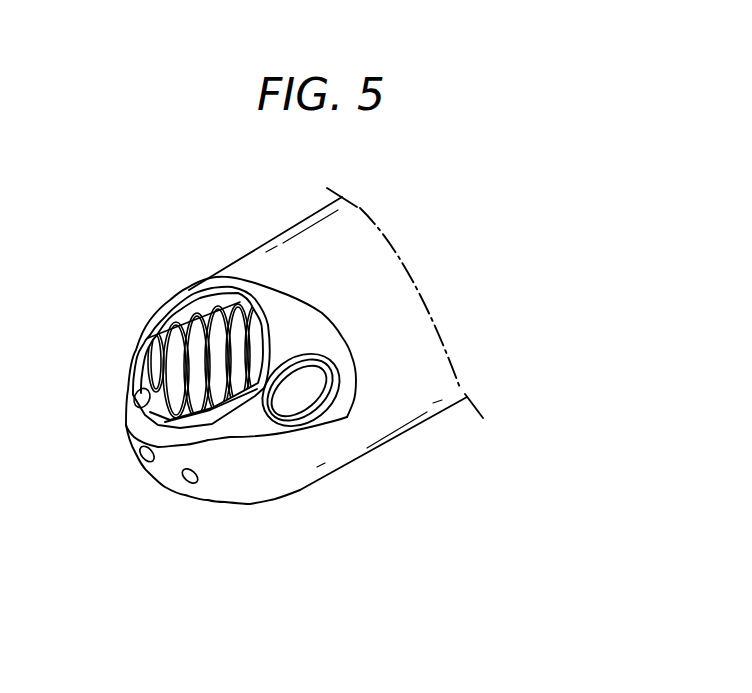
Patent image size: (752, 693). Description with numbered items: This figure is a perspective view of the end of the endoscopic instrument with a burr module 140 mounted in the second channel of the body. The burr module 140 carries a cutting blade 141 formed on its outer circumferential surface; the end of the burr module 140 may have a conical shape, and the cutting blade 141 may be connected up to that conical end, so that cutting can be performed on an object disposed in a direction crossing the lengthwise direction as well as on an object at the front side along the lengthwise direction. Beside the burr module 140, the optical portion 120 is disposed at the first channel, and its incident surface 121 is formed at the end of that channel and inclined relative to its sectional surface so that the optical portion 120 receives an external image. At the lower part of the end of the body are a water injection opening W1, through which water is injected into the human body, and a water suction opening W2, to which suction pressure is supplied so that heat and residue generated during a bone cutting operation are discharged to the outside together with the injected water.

The burr module 140 is at (172, 379).
The cutting blade 141 is at (197, 320).
The optical portion 120 is at (322, 399).
The incident surface 121 is at (270, 405).
The water injection opening W1 is at (145, 459).
The water suction opening W2 is at (188, 480).